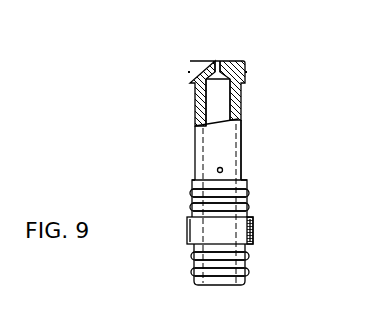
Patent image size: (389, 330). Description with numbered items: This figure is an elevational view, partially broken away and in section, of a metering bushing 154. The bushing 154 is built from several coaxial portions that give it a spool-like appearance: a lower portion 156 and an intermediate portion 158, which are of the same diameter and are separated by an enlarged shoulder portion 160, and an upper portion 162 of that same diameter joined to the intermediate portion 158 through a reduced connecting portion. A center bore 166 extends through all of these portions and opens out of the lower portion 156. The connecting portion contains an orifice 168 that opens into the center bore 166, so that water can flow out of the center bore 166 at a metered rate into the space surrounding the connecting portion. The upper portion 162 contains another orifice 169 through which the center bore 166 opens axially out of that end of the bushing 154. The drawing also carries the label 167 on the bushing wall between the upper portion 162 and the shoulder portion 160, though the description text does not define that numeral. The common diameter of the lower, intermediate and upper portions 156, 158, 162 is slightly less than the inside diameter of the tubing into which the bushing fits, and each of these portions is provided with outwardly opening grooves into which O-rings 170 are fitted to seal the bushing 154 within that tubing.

The metering bushing 154 is at (247, 119).
The lower portion 156 is at (194, 261).
The intermediate portion 158 is at (196, 182).
The enlarged shoulder portion 160 is at (187, 230).
The upper portion 162 is at (190, 68).
The center bore 166 is at (207, 100).
The upper tubular portion 167 is at (196, 142).
The orifice 168 is at (224, 169).
The orifice 169 is at (222, 62).
The O-rings 170 is at (247, 73).